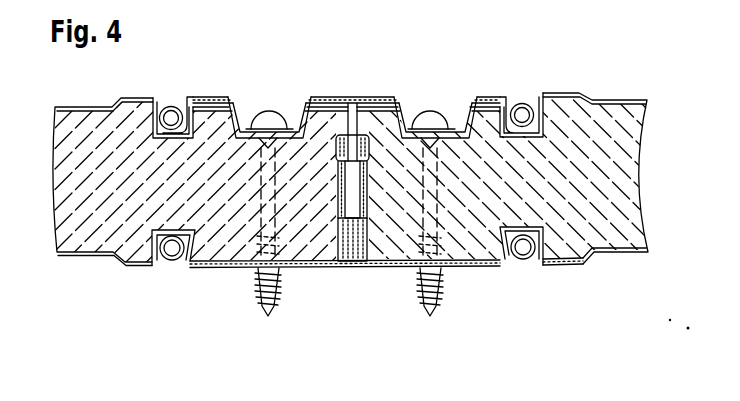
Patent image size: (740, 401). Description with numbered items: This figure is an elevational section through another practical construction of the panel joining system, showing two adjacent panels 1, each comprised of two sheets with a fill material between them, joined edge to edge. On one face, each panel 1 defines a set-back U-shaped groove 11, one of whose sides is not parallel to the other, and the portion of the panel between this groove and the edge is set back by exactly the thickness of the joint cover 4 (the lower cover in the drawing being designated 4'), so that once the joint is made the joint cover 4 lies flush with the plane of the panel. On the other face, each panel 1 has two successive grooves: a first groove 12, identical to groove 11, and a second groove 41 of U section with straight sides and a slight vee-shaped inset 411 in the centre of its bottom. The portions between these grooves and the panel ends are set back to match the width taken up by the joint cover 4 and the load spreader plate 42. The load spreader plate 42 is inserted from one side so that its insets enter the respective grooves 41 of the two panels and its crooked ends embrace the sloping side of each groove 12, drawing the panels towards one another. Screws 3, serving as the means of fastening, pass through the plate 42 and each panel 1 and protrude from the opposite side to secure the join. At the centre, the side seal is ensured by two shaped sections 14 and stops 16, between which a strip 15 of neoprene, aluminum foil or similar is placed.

The panel 1 is at (78, 125).
The means of fastening 3 is at (258, 294).
The joint cover 4 is at (345, 80).
The bottom cover strip 4' is at (386, 288).
The groove 11 is at (170, 268).
The first groove 12 is at (168, 110).
The shaped section 14 is at (344, 135).
The strip 15 is at (338, 205).
The stop 16 is at (342, 268).
The second groove 41 is at (247, 118).
The load spreader plate 42 is at (387, 99).
The inset 411 is at (439, 134).